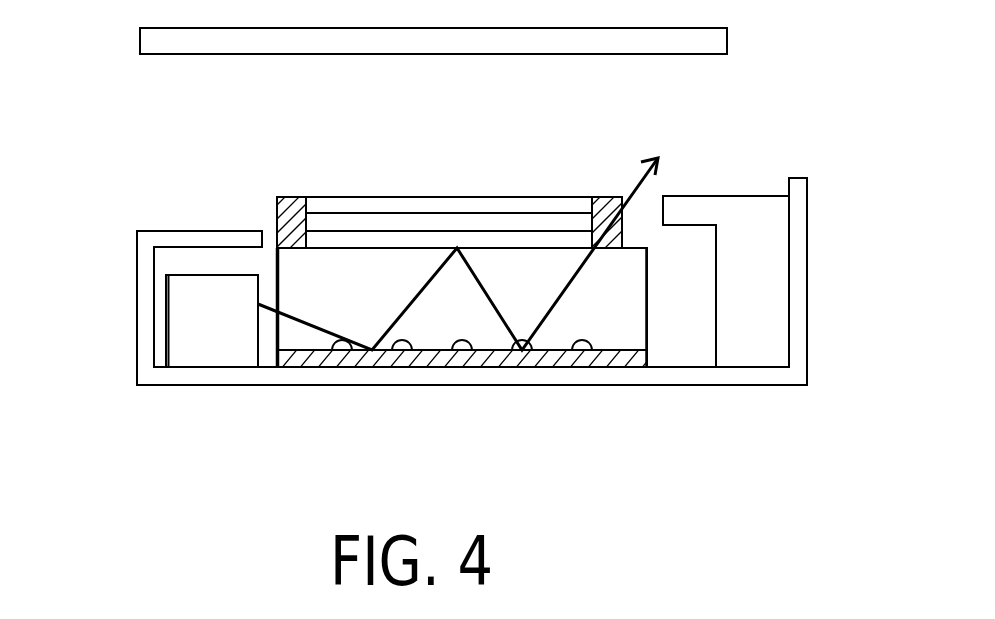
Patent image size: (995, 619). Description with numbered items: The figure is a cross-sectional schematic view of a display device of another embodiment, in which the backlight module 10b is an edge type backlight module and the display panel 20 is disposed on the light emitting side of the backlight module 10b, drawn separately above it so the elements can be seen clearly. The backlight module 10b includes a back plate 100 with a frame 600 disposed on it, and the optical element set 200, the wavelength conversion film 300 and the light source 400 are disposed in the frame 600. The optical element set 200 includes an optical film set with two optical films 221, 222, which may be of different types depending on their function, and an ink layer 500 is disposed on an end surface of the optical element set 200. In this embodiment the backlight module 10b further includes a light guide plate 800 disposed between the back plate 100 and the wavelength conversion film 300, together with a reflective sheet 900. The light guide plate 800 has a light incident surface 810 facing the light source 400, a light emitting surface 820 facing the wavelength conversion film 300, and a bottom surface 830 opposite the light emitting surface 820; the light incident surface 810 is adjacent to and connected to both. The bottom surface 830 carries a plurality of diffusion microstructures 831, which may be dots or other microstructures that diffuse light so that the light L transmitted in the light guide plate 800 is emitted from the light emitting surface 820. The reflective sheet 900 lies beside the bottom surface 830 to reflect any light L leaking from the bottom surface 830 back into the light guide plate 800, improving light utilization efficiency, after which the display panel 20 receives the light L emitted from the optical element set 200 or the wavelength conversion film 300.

The backlight module 10b is at (113, 135).
The display panel 20 is at (717, 43).
The back plate 100 is at (145, 308).
The optical element set 200 is at (108, 156).
The optical film 221 is at (312, 223).
The optical film 222 is at (317, 204).
The wavelength conversion film 300 is at (387, 232).
The light source 400 is at (212, 350).
The ink layer 500 is at (605, 205).
The frame 600 is at (760, 281).
The light guide plate 800 is at (452, 299).
The light incident surface 810 is at (264, 338).
The light emitting surface 820 is at (516, 246).
The bottom surface 830 is at (474, 394).
The diffusion microstructures 831 is at (594, 389).
The reflective sheet 900 is at (303, 363).
The light L is at (327, 337).